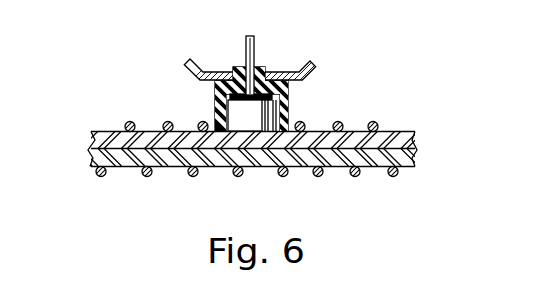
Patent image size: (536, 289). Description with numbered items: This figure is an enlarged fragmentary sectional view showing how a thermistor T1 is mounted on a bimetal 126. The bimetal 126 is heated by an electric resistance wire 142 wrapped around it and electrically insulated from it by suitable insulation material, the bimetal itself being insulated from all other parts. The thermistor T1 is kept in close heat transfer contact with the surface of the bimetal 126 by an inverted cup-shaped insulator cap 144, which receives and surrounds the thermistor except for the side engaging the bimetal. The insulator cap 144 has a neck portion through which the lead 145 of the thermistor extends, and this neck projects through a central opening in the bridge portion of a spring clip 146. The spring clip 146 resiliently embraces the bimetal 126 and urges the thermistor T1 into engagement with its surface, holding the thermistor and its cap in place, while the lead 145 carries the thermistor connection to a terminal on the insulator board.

The bimetal 126 is at (168, 152).
The electric resistance wire 142 is at (340, 122).
The insulator cap 144 is at (214, 96).
The lead 145 is at (254, 47).
The spring clip 146 is at (204, 72).
The thermistor T1 is at (262, 114).